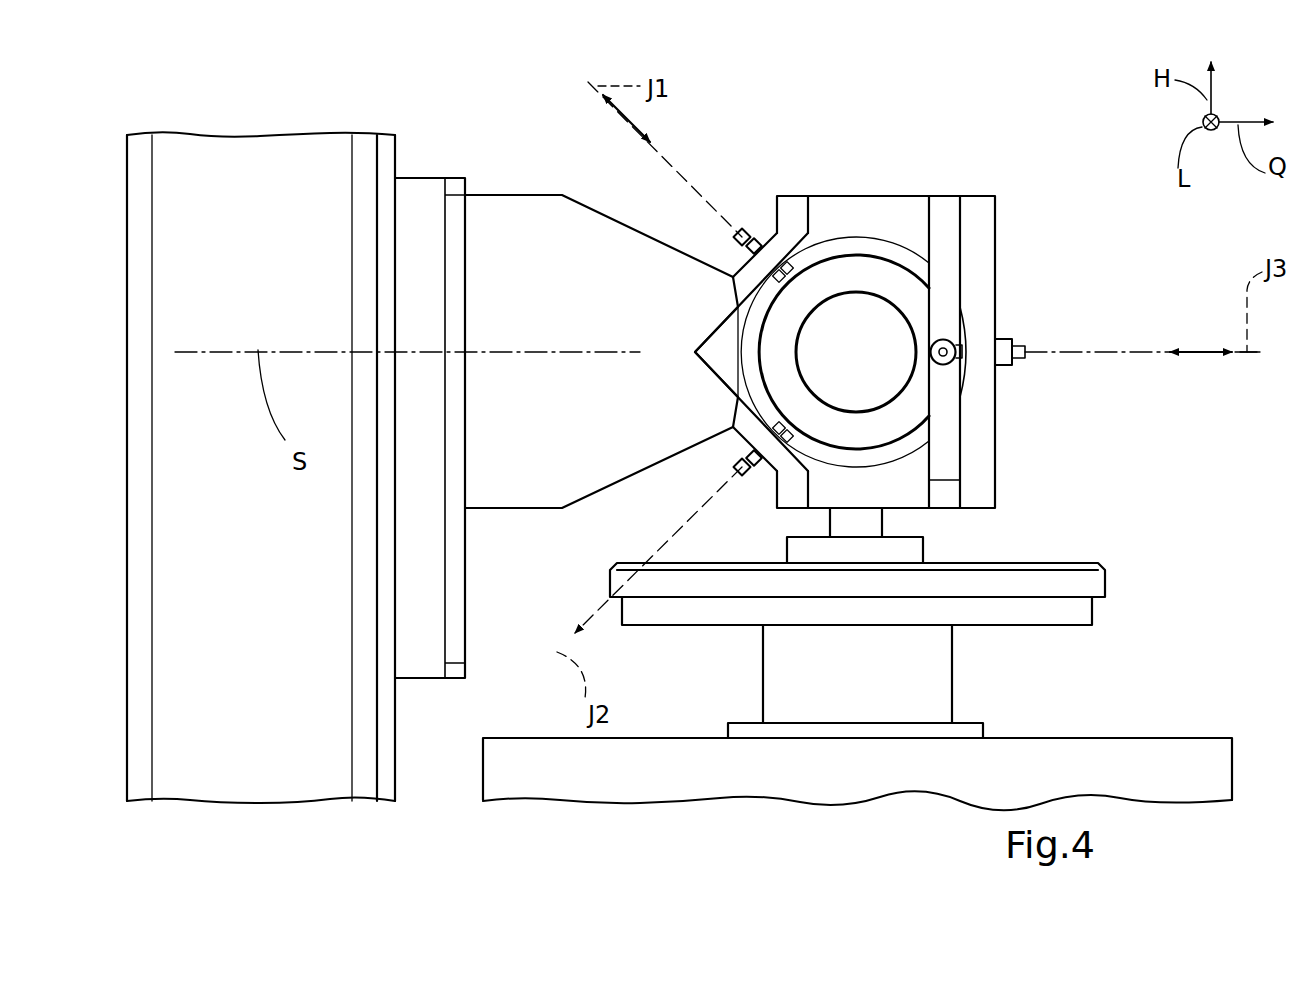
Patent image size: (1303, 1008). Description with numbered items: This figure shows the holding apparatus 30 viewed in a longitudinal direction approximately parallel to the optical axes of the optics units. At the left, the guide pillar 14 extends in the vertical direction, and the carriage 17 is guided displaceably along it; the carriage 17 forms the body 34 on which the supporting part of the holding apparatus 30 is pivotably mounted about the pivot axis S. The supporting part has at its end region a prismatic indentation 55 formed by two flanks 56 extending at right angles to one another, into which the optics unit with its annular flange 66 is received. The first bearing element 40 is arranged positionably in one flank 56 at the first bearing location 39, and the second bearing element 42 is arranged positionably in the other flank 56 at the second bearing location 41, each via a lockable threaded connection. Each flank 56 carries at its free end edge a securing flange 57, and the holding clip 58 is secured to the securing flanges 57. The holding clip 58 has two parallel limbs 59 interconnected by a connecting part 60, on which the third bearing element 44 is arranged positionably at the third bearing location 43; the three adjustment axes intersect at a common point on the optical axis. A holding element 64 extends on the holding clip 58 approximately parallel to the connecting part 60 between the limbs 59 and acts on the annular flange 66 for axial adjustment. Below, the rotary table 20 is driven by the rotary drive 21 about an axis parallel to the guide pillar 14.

The guide pillar 14 is at (283, 163).
The carriage 17 is at (438, 473).
The body 34 is at (420, 663).
The holding apparatus 30 is at (601, 298).
The prismatic indentation 55 is at (722, 350).
The first bearing location 39 is at (820, 232).
The securing flange 57 is at (792, 210).
The limb 59 is at (888, 225).
The holding clip 58 is at (987, 196).
The holding element 64 is at (950, 492).
The annular flange 66 is at (903, 290).
The first bearing element 40 is at (805, 257).
The second bearing location 41 is at (763, 405).
The second bearing element 42 is at (768, 430).
The flank 56 is at (757, 276).
The third bearing location 43 is at (967, 323).
The third bearing element 44 is at (965, 363).
The connecting part 60 is at (988, 323).
The rotary table 20 is at (1105, 577).
The rotary drive 21 is at (1160, 750).